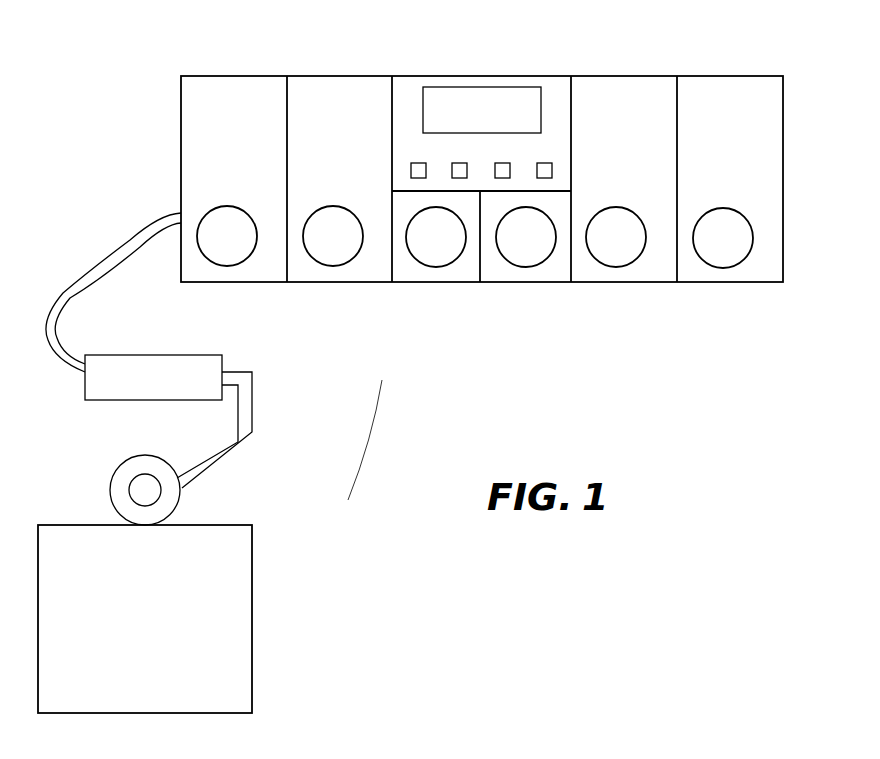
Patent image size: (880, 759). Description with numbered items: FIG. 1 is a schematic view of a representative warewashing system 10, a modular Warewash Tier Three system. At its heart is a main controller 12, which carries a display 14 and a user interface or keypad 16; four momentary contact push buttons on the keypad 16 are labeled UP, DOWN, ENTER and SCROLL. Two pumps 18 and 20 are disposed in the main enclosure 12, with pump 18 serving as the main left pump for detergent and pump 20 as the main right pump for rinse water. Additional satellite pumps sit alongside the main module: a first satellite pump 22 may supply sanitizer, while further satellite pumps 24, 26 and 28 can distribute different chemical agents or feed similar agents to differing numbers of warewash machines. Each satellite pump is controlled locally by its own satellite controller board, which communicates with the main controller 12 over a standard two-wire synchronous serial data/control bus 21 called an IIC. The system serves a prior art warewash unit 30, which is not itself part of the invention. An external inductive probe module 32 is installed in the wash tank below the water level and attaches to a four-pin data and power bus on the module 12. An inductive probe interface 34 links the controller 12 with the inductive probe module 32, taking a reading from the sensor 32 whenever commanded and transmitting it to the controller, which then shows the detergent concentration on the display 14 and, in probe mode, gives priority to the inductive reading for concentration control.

The warewashing system 10 is at (689, 336).
The main controller 12 is at (486, 106).
The display 14 is at (458, 90).
The keypad 16 is at (459, 162).
The pump 18 is at (460, 275).
The pump 20 is at (543, 270).
The two-wire synchronous serial data/control bus 21 is at (110, 258).
The first satellite pump 22 is at (365, 268).
The satellite pump 24 is at (262, 268).
The satellite pump 26 is at (658, 270).
The satellite pump 28 is at (763, 270).
The warewash unit 30 is at (240, 675).
The inductive probe module 32 is at (201, 483).
The inductive probe interface 34 is at (120, 397).